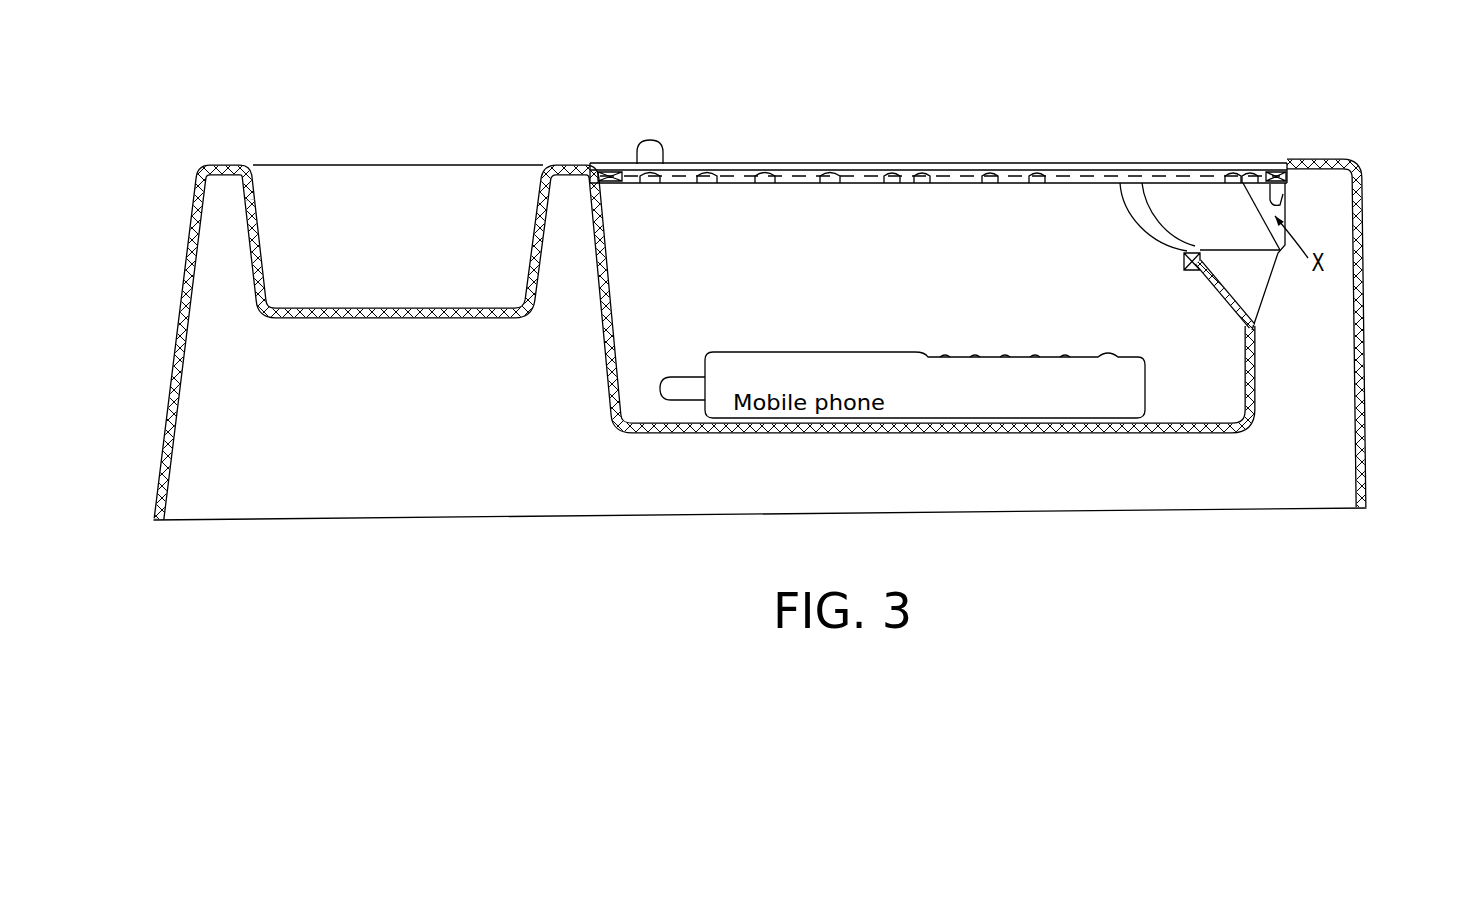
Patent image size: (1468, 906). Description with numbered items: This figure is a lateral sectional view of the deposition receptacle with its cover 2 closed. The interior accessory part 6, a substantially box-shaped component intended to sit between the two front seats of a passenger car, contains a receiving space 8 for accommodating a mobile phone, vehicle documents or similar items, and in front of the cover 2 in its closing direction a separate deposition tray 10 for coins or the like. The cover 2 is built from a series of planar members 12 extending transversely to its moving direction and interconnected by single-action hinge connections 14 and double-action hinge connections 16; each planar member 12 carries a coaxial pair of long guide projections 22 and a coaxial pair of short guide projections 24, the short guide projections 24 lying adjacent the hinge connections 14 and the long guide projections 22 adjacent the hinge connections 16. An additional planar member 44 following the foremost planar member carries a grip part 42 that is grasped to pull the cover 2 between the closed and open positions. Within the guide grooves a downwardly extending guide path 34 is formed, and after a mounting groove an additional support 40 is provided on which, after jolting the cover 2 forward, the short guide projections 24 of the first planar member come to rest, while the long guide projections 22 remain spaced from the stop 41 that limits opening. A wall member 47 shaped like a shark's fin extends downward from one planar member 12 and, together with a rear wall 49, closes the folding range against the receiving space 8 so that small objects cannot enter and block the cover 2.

The cover 2 is at (870, 130).
The interior accessory part 6 is at (1392, 218).
The receiving space 8 is at (898, 323).
The deposition tray 10 is at (405, 285).
The planar member 12 is at (707, 185).
The single-action hinge connection 14 is at (735, 180).
The double-action hinge connection 16 is at (1010, 180).
The long guide projections 22 is at (993, 185).
The short guide projections 24 is at (893, 187).
The guide path 34 is at (1150, 230).
The additional support 40 is at (1270, 188).
The stop 41 is at (1275, 176).
The grip part 42 is at (648, 150).
The additional planar member 44 is at (605, 184).
The wall member 47 is at (1150, 216).
The rear wall 49 is at (1213, 288).